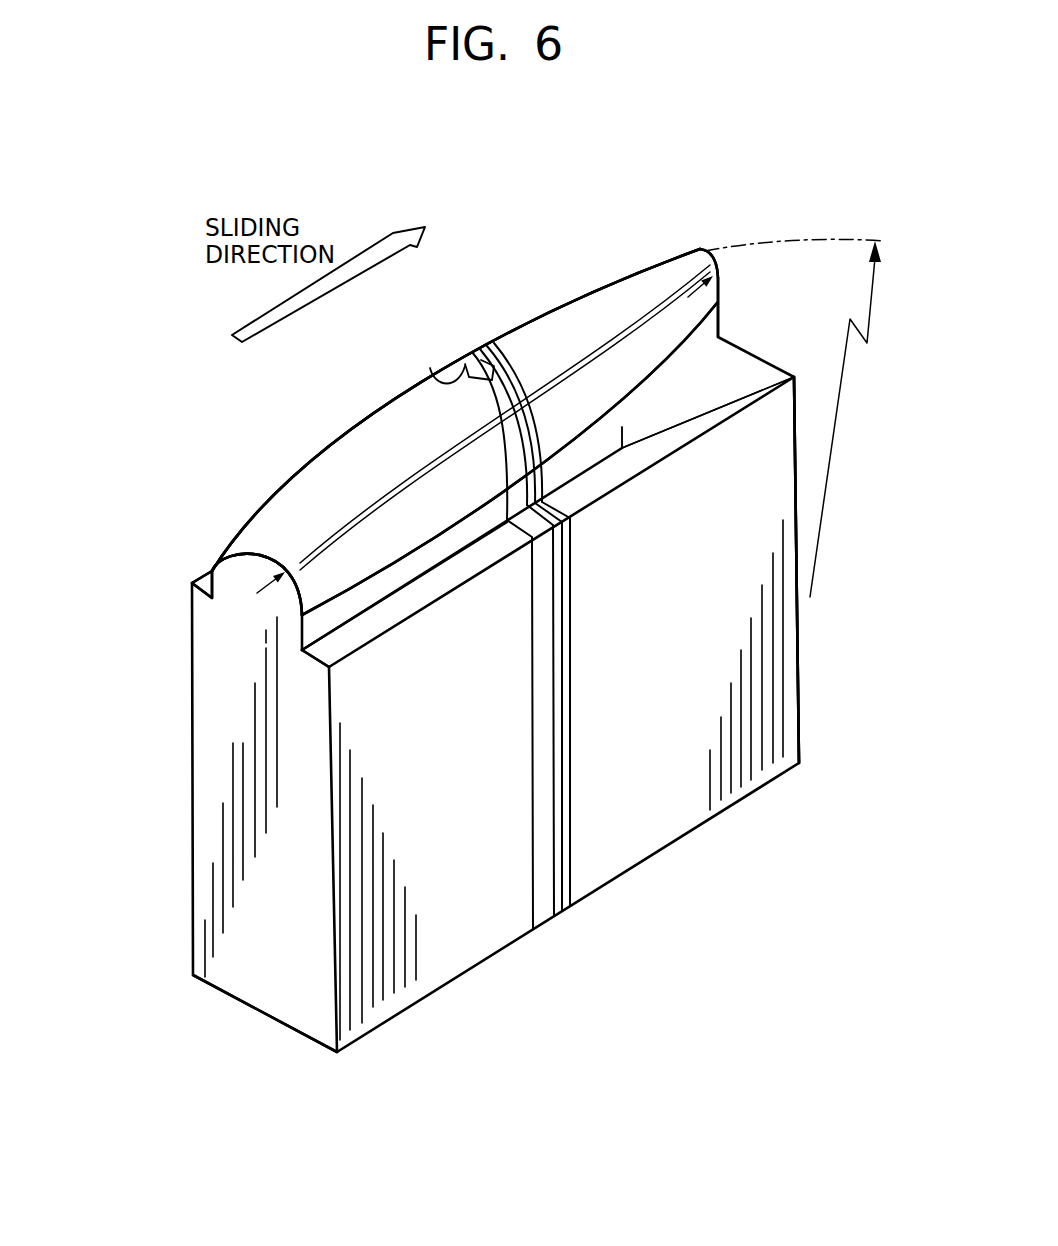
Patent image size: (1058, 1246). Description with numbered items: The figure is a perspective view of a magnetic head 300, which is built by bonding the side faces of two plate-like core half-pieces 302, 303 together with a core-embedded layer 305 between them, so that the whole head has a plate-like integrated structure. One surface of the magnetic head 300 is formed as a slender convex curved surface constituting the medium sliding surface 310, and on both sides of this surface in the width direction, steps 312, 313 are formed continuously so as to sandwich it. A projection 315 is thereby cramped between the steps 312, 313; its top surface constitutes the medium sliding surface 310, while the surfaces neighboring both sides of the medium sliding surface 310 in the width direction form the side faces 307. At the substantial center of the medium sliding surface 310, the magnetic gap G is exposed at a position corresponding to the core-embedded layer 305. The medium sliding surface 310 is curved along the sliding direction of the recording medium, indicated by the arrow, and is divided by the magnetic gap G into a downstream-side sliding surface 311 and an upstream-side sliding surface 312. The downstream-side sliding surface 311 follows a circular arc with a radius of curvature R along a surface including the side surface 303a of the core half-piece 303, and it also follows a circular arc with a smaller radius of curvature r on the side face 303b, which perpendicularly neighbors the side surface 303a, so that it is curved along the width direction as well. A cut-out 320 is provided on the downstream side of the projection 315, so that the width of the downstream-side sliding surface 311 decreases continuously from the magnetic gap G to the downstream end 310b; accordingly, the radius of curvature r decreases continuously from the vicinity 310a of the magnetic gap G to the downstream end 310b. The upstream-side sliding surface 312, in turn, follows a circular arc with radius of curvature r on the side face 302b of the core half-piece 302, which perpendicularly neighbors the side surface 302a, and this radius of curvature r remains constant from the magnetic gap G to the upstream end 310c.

The magnetic head 300 is at (685, 185).
The core half-piece 302 is at (258, 973).
The side surface of core half-piece 302a is at (433, 928).
The side face of core half-piece 302b is at (204, 782).
The core half-piece 303 is at (760, 708).
The side surface of core half-piece 303a is at (648, 777).
The side face of core half-piece 303b is at (800, 656).
The core-embedded layer 305 is at (551, 900).
The side face 307 is at (201, 588).
The medium sliding surface 310 is at (557, 327).
The vicinity of the magnetic gap 310a is at (517, 352).
The downstream end 310b is at (693, 249).
The upstream end 310c is at (268, 540).
The downstream-side sliding surface 311 is at (625, 297).
The upstream-side sliding surface 312 is at (384, 430).
The step 313 is at (202, 578).
The projection 315 is at (243, 566).
The cut-out 320 is at (670, 375).
The magnetic gap G is at (440, 374).
The radius of curvature R is at (795, 418).
The radius of curvature r is at (485, 444).